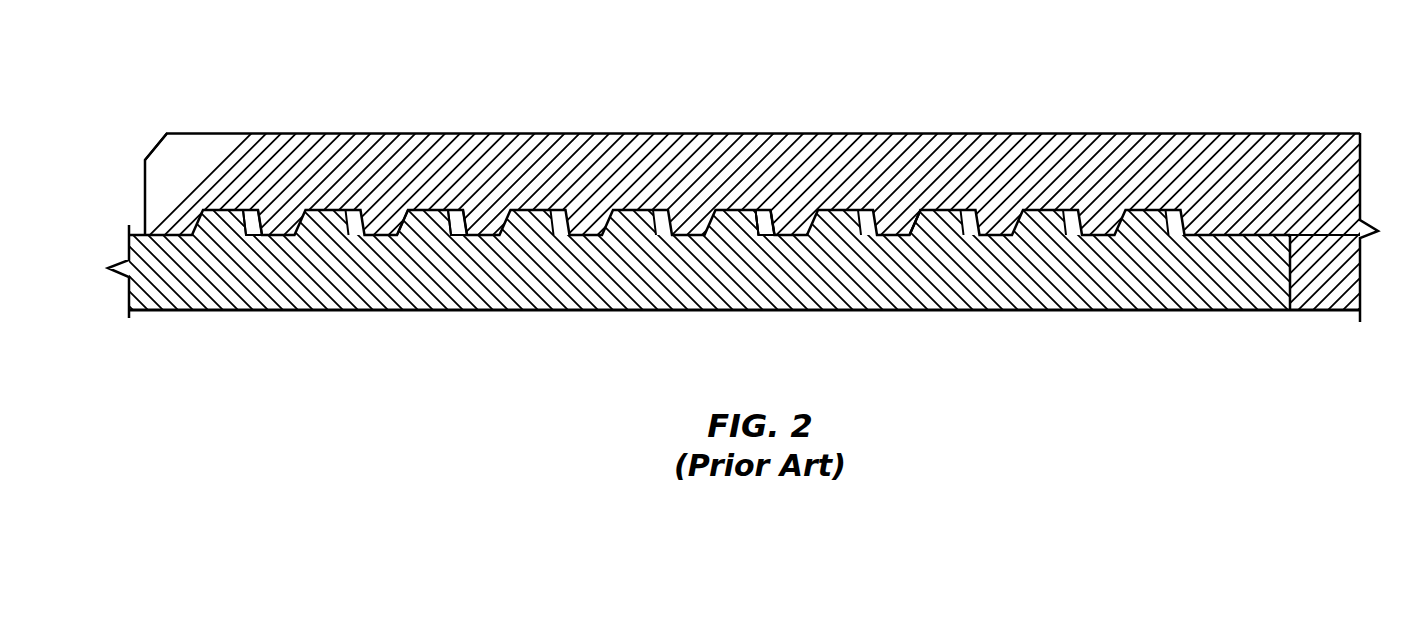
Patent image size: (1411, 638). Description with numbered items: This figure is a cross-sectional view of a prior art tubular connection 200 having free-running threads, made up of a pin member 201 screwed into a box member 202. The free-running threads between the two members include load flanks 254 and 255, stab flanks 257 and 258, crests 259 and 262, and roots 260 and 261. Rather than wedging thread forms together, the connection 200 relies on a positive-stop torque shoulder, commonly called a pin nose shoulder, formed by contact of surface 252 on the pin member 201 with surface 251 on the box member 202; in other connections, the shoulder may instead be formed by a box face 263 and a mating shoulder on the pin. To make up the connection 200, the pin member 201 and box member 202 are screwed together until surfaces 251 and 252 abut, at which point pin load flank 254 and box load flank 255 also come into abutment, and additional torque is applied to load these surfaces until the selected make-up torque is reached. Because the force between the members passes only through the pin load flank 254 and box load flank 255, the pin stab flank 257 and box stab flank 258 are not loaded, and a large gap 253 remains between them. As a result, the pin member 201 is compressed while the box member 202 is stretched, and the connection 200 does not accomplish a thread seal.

The prior art connection 200 is at (1120, 91).
The pin member 201 is at (253, 286).
The box member 202 is at (1291, 203).
The surface 251 is at (1292, 278).
The surface 252 is at (1290, 280).
The gap 253 is at (248, 217).
The pin load flank 254 is at (912, 234).
The box load flank 255 is at (925, 213).
The pin stab flank 257 is at (772, 213).
The box stab flank 258 is at (755, 213).
The crest 259 is at (418, 210).
The root 260 is at (433, 213).
The root 261 is at (580, 237).
The crest 262 is at (581, 237).
The box face 263 is at (145, 198).